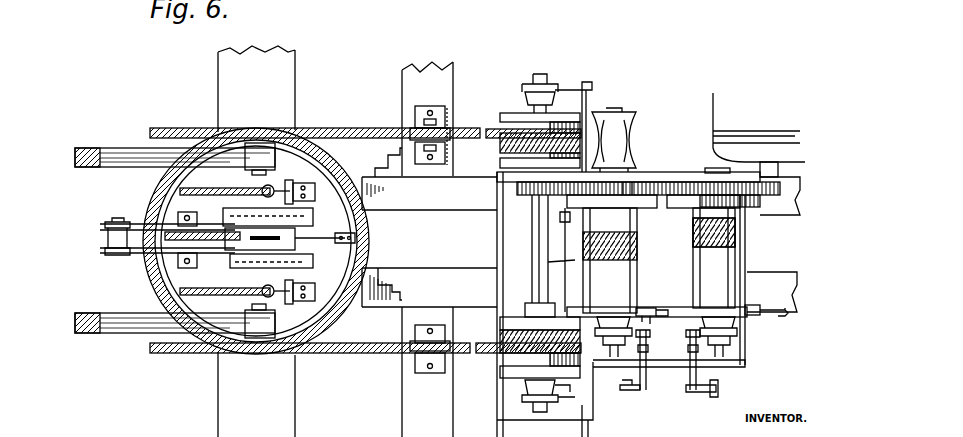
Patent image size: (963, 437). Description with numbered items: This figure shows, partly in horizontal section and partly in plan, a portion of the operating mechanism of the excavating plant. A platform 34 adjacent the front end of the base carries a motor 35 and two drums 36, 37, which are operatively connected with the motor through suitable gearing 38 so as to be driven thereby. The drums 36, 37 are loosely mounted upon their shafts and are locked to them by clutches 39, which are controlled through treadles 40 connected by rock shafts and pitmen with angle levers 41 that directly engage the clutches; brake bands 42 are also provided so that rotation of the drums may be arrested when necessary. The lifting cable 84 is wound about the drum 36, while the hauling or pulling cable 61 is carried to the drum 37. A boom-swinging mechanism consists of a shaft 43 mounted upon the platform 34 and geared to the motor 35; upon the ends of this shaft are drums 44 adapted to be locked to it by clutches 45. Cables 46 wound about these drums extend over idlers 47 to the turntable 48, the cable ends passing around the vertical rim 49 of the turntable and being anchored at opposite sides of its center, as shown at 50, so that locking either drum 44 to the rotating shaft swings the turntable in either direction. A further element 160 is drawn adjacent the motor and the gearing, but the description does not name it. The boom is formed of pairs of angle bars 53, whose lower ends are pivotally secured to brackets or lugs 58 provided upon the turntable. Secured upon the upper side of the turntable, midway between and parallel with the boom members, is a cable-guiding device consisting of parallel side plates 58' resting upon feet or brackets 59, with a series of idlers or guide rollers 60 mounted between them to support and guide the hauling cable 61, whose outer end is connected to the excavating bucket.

The platform 34 is at (497, 253).
The motor 35 is at (722, 120).
The drum 36 is at (702, 280).
The drum 37 is at (637, 278).
The gearing 38 is at (645, 185).
The clutches 39 is at (612, 317).
The treadles 40 is at (686, 392).
The angle levers 41 is at (648, 345).
The brake bands 42 is at (660, 302).
The shaft 43 is at (533, 245).
The drums 44 is at (500, 113).
The clutches 45 is at (552, 92).
The cables 46 is at (362, 354).
The idlers 47 is at (410, 165).
The turntable 48 is at (325, 138).
The vertical rim 49 is at (336, 170).
The anchoring points 50 is at (275, 188).
The angle bars 53 is at (143, 148).
The brackets or lugs 58 is at (253, 242).
The side plates 58' is at (122, 253).
The feet or brackets 59 is at (188, 268).
The idlers or guide rollers 60 is at (100, 226).
The hauling or pulling cable 61 is at (313, 212).
The lifting cable 84 is at (693, 240).
The drum 160 is at (630, 118).